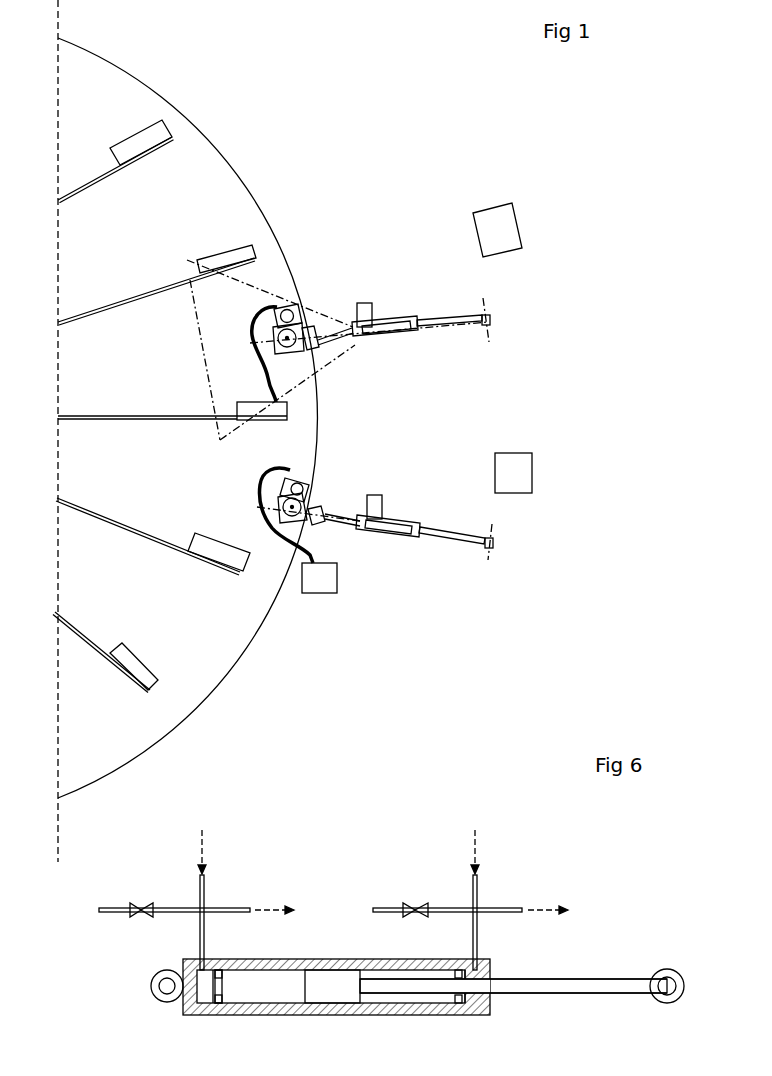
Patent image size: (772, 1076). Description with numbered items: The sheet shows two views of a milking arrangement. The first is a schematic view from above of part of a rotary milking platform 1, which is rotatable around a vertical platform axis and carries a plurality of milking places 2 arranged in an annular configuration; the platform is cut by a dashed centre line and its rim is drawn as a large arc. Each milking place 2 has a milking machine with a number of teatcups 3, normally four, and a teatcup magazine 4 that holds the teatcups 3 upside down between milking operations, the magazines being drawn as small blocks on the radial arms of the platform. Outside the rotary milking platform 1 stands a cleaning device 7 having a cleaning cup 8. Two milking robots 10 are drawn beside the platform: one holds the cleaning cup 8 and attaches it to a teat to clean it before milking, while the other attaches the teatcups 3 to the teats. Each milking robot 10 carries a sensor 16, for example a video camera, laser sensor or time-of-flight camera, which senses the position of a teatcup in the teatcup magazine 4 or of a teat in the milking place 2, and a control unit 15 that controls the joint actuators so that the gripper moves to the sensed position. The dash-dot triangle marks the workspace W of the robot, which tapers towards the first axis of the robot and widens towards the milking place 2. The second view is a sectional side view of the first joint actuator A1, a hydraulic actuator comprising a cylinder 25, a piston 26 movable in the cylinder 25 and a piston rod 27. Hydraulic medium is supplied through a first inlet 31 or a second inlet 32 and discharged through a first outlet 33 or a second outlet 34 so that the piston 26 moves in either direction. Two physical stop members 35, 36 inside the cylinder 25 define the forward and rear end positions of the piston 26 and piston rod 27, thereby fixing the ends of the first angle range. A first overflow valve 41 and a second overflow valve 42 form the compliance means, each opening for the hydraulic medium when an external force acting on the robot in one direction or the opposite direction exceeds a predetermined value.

In FIG. 1, the rotary milking platform 1 is at (262, 162).
In FIG. 1, the milking place 2 is at (89, 120).
In FIG. 1, the teatcup 3 is at (289, 312).
In FIG. 1, the teatcup magazine 4 is at (162, 130).
In FIG. 1, the cleaning device 7 is at (320, 585).
In FIG. 1, the cleaning cup 8 is at (306, 484).
In FIG. 1, the milking robot 10 is at (447, 344).
In FIG. 1, the control unit 15 is at (494, 240).
In FIG. 1, the sensor 16 is at (313, 331).
In FIG. 1, the workspace W is at (333, 362).
In FIG. 6, the cylinder 25 is at (184, 1015).
In FIG. 6, the piston 26 is at (322, 995).
In FIG. 6, the piston rod 27 is at (540, 985).
In FIG. 6, the first inlet 31 is at (200, 890).
In FIG. 6, the second inlet 32 is at (473, 888).
In FIG. 6, the first outlet 33 is at (233, 908).
In FIG. 6, the second outlet 34 is at (503, 908).
In FIG. 6, the stop member 35 is at (223, 1012).
In FIG. 6, the stop member 36 is at (445, 1010).
In FIG. 6, the first overflow valve 41 is at (147, 906).
In FIG. 6, the second overflow valve 42 is at (410, 906).
In FIG. 6, the first joint actuator A1 is at (184, 964).